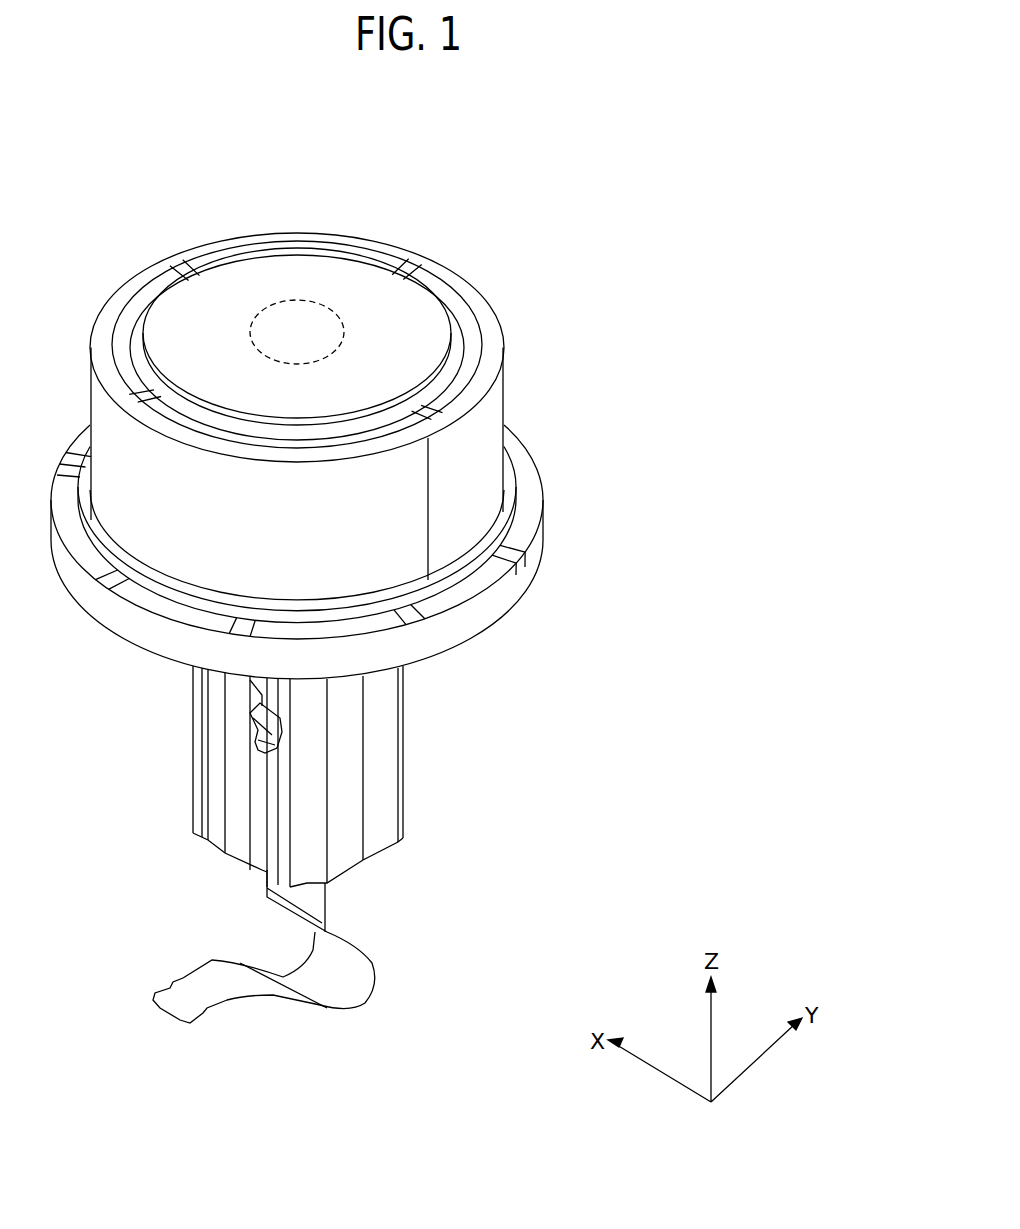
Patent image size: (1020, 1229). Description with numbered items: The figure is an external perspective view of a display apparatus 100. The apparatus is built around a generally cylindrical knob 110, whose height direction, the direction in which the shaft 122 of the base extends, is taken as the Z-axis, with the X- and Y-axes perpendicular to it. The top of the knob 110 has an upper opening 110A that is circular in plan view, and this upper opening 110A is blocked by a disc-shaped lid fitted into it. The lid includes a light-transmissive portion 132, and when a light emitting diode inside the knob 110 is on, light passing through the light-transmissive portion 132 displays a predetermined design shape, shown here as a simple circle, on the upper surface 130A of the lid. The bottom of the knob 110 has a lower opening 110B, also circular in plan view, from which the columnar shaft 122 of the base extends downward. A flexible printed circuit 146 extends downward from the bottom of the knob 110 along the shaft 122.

The display apparatus 100 is at (673, 142).
The knob 110 is at (505, 404).
The upper opening 110A is at (330, 277).
The lower opening 110B is at (455, 618).
The upper surface 130A is at (257, 273).
The light-transmissive portion 132 is at (337, 318).
The shaft 122 is at (400, 742).
The flexible printed circuit 146 is at (375, 962).